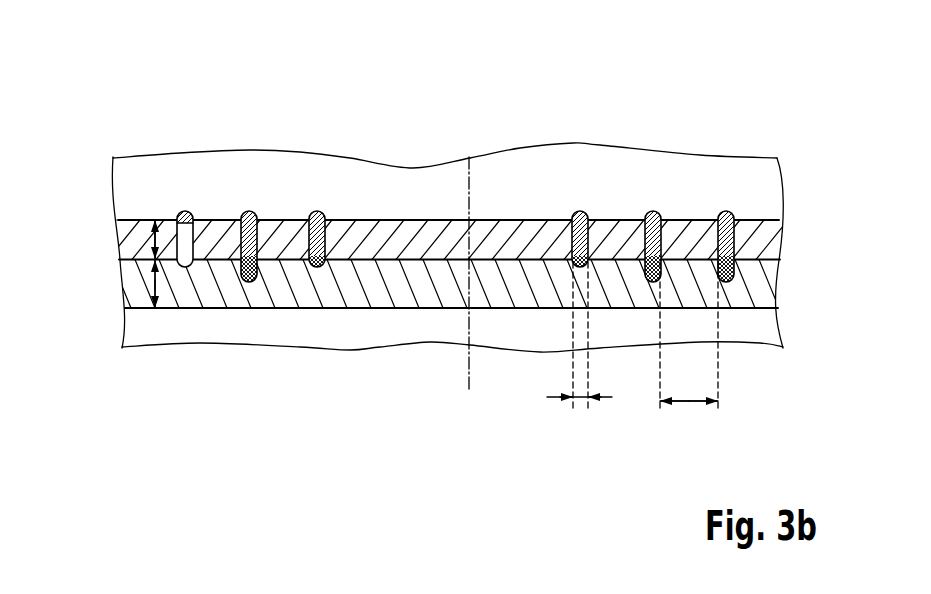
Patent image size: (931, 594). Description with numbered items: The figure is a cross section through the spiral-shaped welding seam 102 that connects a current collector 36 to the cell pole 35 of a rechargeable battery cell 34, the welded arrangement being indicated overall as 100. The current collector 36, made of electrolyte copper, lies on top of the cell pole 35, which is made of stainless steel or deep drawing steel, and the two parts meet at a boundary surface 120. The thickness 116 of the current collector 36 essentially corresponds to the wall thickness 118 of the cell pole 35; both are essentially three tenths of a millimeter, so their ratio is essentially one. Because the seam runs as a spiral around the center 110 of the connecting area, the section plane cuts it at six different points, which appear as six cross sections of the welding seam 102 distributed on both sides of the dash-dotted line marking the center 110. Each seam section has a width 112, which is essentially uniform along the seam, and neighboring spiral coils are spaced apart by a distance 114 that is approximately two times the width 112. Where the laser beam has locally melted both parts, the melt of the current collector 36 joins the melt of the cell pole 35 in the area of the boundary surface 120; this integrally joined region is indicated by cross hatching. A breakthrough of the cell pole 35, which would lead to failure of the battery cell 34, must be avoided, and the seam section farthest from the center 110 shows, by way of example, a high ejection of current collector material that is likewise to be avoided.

The battery cell / cell arrangement 100 is at (757, 125).
The welding seam 102 is at (313, 210).
The current collector 36 is at (760, 220).
The rechargeable battery cell 34 is at (433, 330).
The cell pole 35 is at (757, 287).
The center of connecting area 110 is at (465, 385).
The width of welding seam 112 is at (581, 398).
The distance between spiral coils 114 is at (689, 402).
The thickness of current collector 116 is at (124, 233).
The wall thickness of cell pole 118 is at (126, 288).
The boundary surface 120 is at (138, 258).